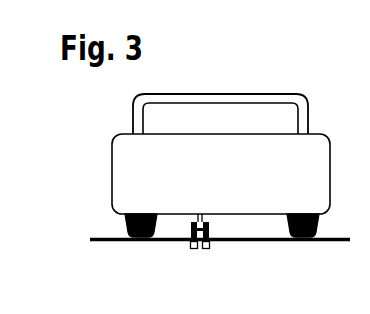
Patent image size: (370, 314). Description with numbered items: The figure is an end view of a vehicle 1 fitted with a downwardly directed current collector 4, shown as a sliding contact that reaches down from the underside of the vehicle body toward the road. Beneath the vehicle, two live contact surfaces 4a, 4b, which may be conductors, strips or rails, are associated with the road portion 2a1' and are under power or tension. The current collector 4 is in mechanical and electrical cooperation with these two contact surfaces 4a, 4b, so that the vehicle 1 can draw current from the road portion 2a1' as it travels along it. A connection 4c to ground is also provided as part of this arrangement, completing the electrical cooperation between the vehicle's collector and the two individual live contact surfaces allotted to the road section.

The vehicle 1 is at (126, 153).
The road portion 2a1' is at (220, 257).
The current collector 4 is at (212, 232).
The live contact surface 4a is at (207, 250).
The live contact surface 4b is at (193, 250).
The connection to ground 4c is at (193, 232).